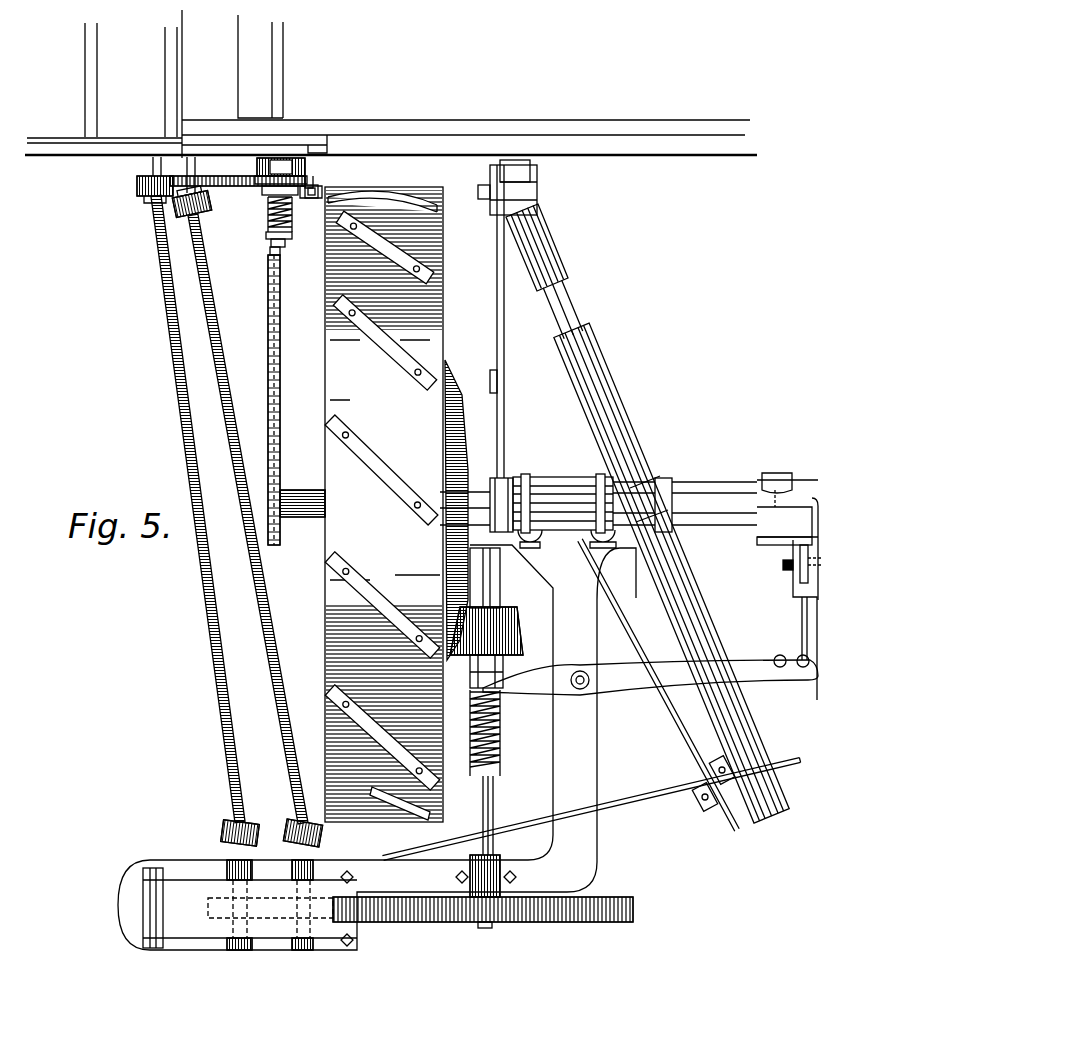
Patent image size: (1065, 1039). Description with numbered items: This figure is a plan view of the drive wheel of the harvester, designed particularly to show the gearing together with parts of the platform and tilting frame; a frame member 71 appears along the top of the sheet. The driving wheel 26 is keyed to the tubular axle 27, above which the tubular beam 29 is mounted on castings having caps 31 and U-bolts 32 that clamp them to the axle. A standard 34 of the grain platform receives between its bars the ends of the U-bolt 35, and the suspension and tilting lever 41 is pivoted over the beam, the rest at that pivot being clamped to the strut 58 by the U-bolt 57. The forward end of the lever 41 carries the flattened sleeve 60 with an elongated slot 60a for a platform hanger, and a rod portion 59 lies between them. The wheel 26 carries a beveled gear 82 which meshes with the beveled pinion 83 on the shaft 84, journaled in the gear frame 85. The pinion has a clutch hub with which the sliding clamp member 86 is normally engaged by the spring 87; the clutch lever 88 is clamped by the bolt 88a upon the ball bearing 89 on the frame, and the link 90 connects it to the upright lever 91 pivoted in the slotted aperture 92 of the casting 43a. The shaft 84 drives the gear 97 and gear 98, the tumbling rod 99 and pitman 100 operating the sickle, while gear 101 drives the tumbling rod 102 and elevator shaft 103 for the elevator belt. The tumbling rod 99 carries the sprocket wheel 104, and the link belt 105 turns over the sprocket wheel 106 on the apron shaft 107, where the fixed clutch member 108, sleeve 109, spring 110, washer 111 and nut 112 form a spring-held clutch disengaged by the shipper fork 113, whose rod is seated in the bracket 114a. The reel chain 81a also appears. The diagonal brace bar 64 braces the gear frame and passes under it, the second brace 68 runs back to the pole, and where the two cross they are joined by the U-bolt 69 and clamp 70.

The frame beam 71 is at (29, 171).
The elevator shaft 103 is at (150, 173).
The sprocket wheel 104 is at (204, 197).
The link belt 105 is at (232, 178).
The shaft 107 is at (272, 160).
The fixed member of clutch 108 is at (308, 178).
The sprocket wheel 106 is at (306, 190).
The shipper fork 113 is at (310, 199).
The sleeve 109 is at (270, 214).
The spring 110 is at (290, 224).
The washer 111 is at (287, 238).
The nut 112 is at (272, 263).
The reel chain 81a is at (280, 362).
The driving wheel 26 is at (445, 322).
The bracket 114a is at (340, 193).
The beveled gear 82 is at (460, 402).
The elongated aperture or slot 60a is at (518, 202).
The sleeve 60 is at (553, 257).
The rod 59 is at (574, 318).
The suspension and tilting lever 41 is at (602, 392).
The U-bolt 35 is at (490, 516).
The axle 27 is at (472, 490).
The standard 34 is at (492, 468).
The cap 31 is at (545, 480).
The U-bolt 32 is at (527, 474).
The U-bolt 57 is at (655, 480).
The strut 58 is at (677, 535).
The tubular beam 29 is at (700, 490).
The casting 43a is at (797, 523).
The upright lever 91 is at (796, 558).
The slotted aperture 92 is at (783, 570).
The link 90 is at (800, 637).
The lever 88 is at (633, 690).
The bolt 88a is at (585, 692).
The ball bearing 89 is at (582, 668).
The gear frame 85 is at (183, 868).
The gear 98 is at (310, 918).
The gear 101 is at (258, 920).
The pitman 100 is at (272, 833).
The beveled pinion 83 is at (514, 626).
The sliding clamp member 86 is at (468, 690).
The spring 87 is at (497, 746).
The shaft 84 is at (494, 792).
The gear 97 is at (452, 922).
The brace 68 is at (680, 727).
The brace bar 64 is at (638, 806).
The clamp 70 is at (721, 768).
The U-bolt 69 is at (705, 804).
The tumbling rod 102 is at (212, 652).
The tumbling rod 99 is at (266, 580).